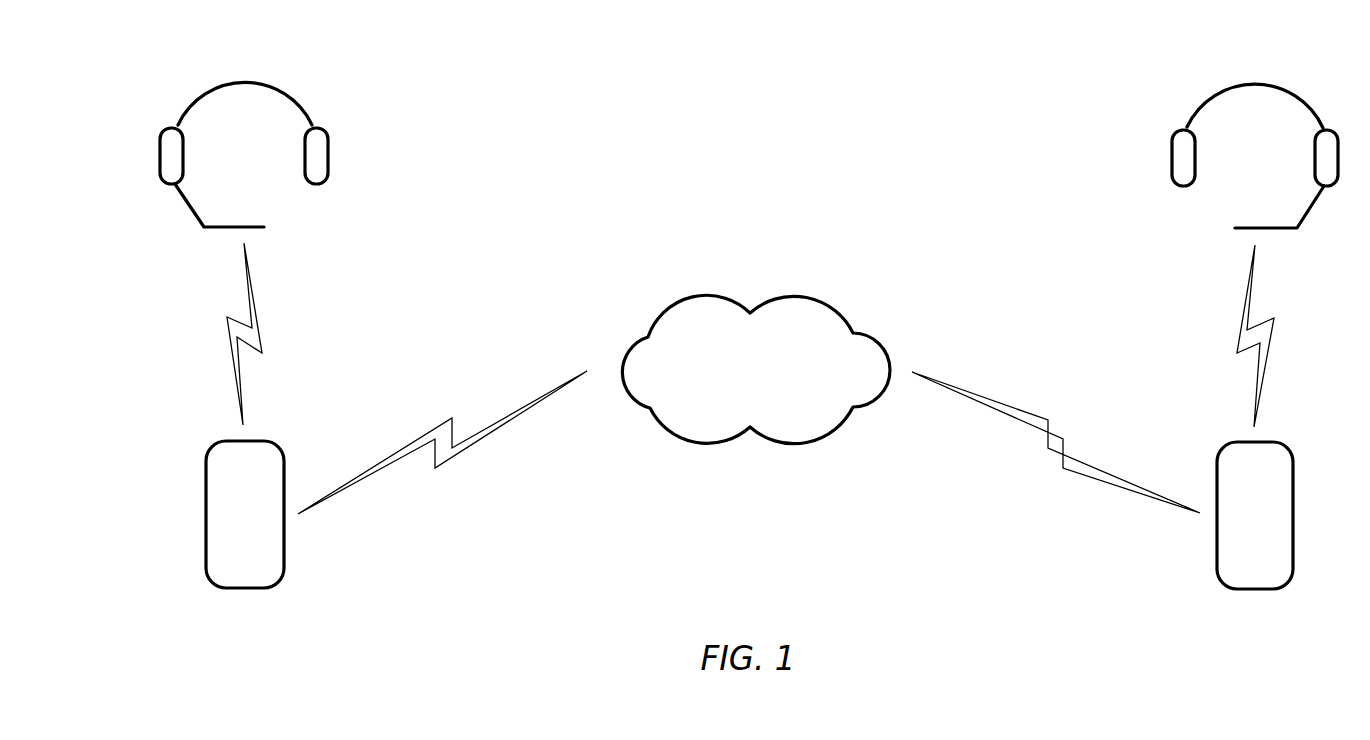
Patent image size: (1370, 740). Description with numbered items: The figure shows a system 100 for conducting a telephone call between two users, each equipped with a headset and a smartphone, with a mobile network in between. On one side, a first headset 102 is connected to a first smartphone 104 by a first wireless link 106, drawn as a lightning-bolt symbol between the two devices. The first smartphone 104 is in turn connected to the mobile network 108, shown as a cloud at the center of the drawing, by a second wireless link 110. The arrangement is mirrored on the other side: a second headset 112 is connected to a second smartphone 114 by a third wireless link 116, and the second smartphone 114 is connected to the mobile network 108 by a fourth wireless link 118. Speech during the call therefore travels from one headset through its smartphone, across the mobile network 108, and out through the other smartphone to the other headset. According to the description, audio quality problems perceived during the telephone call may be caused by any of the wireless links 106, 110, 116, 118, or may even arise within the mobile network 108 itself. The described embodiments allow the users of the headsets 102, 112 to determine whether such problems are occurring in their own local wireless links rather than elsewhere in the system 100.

The system 100 is at (746, 78).
The first headset 102 is at (228, 165).
The first smartphone 104 is at (228, 522).
The first wireless link 106 is at (280, 325).
The mobile network 108 is at (733, 392).
The second wireless link 110 is at (460, 468).
The second headset 112 is at (1238, 165).
The second smartphone 114 is at (1238, 522).
The third wireless link 116 is at (1218, 327).
The fourth wireless link 118 is at (1038, 468).